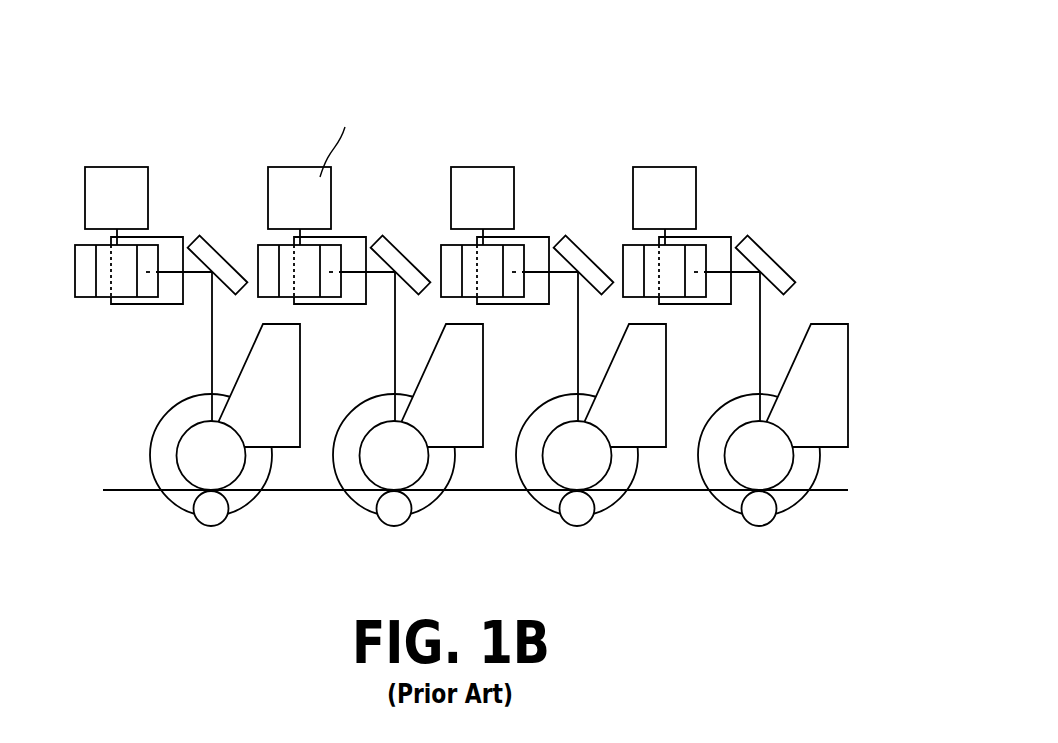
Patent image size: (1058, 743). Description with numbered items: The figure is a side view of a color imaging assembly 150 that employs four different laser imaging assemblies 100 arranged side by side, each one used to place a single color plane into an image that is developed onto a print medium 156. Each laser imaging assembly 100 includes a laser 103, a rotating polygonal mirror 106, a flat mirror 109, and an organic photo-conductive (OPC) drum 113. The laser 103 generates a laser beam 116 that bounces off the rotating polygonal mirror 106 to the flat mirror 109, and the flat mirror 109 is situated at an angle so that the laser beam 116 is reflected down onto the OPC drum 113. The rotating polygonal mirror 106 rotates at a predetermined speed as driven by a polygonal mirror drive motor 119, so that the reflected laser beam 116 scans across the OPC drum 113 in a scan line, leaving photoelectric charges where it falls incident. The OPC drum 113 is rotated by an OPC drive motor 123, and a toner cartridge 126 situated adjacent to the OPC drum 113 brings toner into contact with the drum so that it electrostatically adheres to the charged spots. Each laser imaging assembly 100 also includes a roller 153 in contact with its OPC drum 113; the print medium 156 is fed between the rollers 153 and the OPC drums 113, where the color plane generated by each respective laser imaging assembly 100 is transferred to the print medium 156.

The laser imaging assembly 100 is at (468, 329).
The color imaging assembly 150 is at (461, 296).
The laser 103 is at (163, 233).
The rotating polygonal mirror 106 is at (91, 300).
The flat mirror 109 is at (401, 223).
The organic photo-conductive (OPC) drum 113 is at (190, 425).
The laser beam 116 is at (369, 347).
The polygonal mirror drive motor 119 is at (274, 172).
The OPC drive motor 123 is at (249, 505).
The toner cartridge 126 is at (469, 385).
The roller 153 is at (602, 533).
The print medium 156 is at (490, 492).